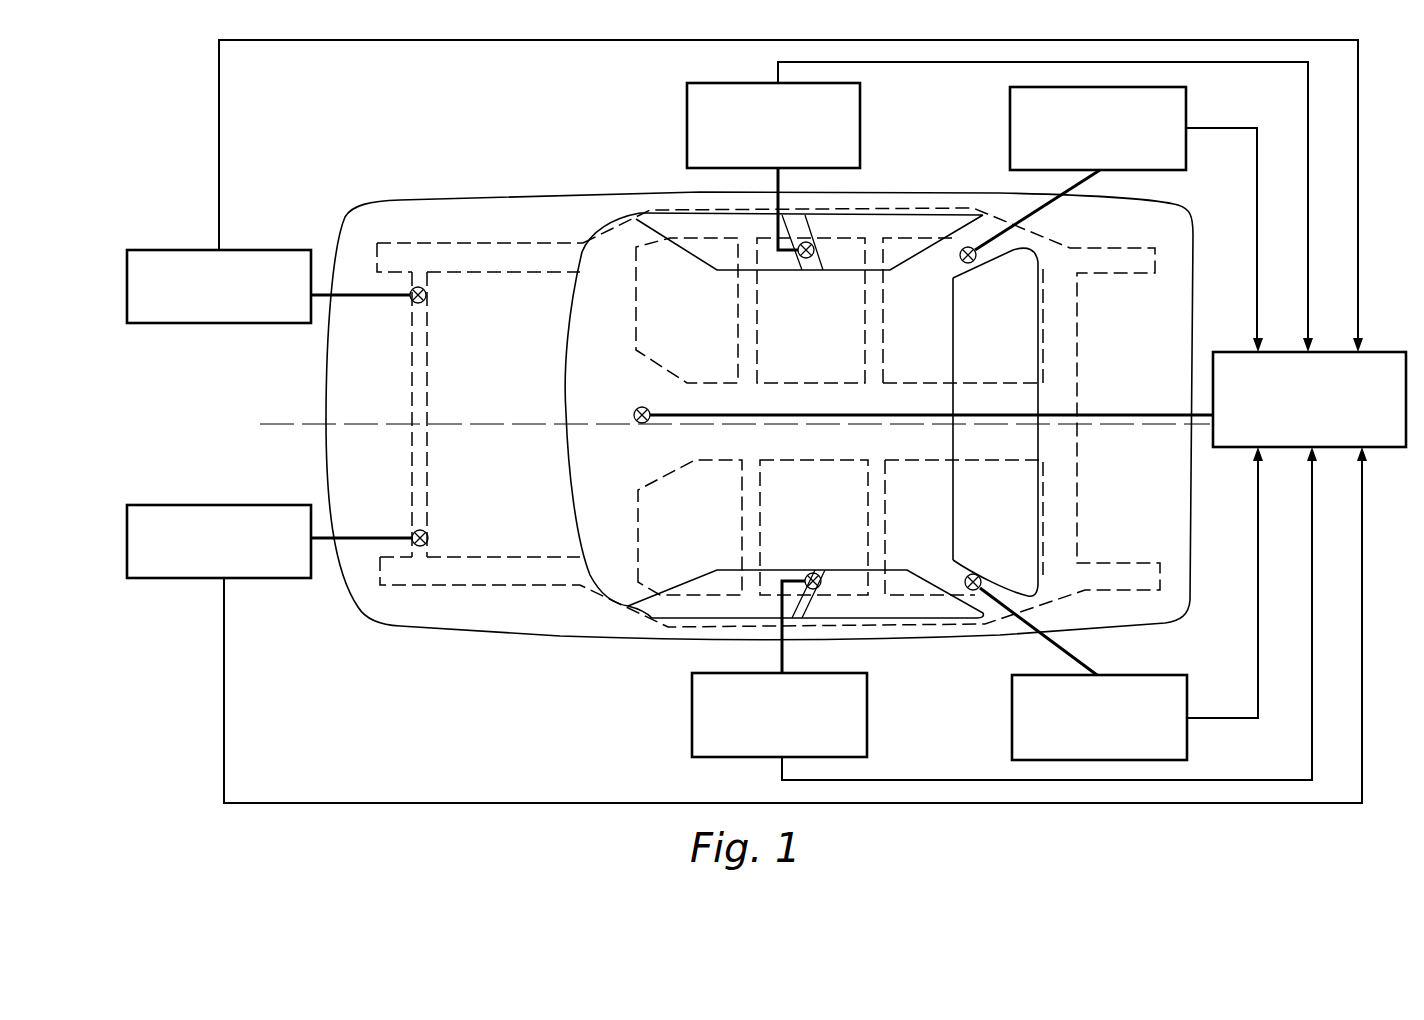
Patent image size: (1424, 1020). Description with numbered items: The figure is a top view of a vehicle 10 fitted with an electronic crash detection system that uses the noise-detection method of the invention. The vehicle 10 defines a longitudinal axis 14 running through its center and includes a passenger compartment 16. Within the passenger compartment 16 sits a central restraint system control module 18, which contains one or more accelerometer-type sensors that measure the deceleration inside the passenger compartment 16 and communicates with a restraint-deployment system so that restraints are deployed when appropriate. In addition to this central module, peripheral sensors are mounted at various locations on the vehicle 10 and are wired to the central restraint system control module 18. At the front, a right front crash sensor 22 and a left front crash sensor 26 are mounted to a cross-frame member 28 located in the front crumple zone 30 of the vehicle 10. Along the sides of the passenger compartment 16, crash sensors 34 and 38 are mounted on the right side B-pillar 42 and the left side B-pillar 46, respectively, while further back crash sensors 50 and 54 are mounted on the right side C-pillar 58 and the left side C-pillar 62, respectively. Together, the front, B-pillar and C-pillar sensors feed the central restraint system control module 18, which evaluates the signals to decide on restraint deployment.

The vehicle 10 is at (415, 149).
The longitudinal axis 14 is at (291, 420).
The passenger compartment 16 is at (622, 488).
The central restraint system control module 18 is at (1232, 352).
The right front crash sensor 22 is at (162, 250).
The left front crash sensor 26 is at (165, 505).
The cross-frame member 28 is at (430, 383).
The front crumple zone 30 is at (393, 473).
The crash sensor 34 is at (687, 110).
The crash sensor 38 is at (692, 713).
The right side B-pillar 42 is at (818, 268).
The left side B-pillar 46 is at (816, 570).
The crash sensor 50 is at (1010, 108).
The crash sensor 54 is at (1012, 704).
The right side C-pillar 58 is at (957, 267).
The left side C-pillar 62 is at (965, 572).